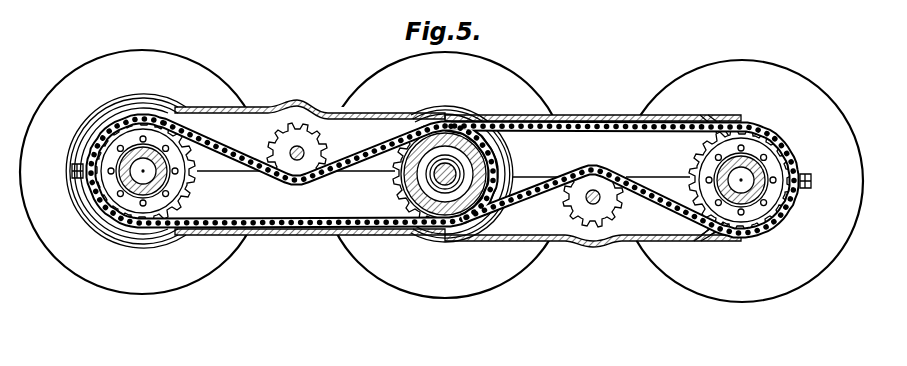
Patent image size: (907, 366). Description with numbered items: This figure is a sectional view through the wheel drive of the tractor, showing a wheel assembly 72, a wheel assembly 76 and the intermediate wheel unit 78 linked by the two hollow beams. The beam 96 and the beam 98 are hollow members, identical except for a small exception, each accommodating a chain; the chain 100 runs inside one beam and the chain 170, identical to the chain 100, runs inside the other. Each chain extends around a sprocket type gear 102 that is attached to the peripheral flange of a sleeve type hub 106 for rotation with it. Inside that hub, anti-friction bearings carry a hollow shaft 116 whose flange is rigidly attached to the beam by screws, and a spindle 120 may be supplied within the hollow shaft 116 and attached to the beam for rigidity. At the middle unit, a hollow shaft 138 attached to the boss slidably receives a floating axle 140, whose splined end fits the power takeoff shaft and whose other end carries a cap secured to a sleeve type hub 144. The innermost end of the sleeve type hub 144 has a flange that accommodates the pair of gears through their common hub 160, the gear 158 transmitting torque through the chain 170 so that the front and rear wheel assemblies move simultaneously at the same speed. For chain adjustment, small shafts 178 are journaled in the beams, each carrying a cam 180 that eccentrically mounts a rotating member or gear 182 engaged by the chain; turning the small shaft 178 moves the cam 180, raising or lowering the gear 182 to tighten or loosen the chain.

The wheel assembly 72 is at (172, 45).
The intermediate wheel 78 is at (515, 67).
The wheel assembly 76 is at (831, 87).
The beam 96 is at (197, 108).
The beam 98 is at (679, 118).
The chain 100 is at (548, 131).
The sprocket type gear 102 is at (135, 130).
The sleeve type hub 106 is at (768, 193).
The hollow shaft 116 is at (760, 167).
The spindle 120 is at (742, 215).
The hollow shaft 138 is at (428, 158).
The floating axle 140 is at (449, 158).
The sleeve type hub 144 is at (451, 200).
The gear 158 is at (396, 186).
The common hub 160 is at (443, 158).
The chain 170 is at (207, 139).
The small shaft 178 is at (304, 151).
The cam 180 is at (285, 147).
The rotating member or gear 182 is at (264, 168).